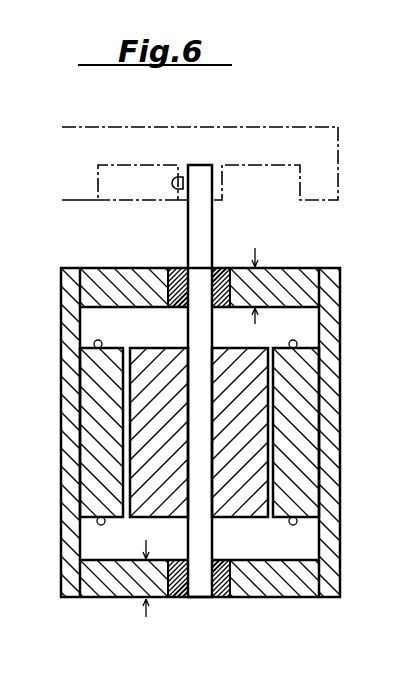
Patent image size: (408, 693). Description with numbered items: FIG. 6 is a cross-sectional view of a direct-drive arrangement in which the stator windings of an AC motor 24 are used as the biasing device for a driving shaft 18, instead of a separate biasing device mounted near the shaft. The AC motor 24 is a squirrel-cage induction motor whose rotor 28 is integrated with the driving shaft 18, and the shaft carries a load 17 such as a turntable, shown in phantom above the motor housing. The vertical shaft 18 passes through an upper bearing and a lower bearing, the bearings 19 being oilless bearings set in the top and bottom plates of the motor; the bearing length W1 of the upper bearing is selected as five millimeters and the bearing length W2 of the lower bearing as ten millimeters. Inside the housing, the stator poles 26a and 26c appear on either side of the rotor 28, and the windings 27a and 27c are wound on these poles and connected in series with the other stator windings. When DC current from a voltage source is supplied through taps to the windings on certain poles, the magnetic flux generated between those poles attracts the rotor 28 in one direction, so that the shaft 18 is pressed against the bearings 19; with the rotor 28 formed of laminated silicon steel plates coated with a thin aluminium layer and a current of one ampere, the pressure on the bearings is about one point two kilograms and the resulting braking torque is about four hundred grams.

The load 17 is at (338, 205).
The driving shaft 18 is at (188, 228).
The bearings 19 is at (176, 288).
The AC motor 24 is at (385, 437).
The pole 26a is at (100, 475).
The pole 26c is at (310, 472).
The winding 27a is at (102, 339).
The winding 27c is at (298, 343).
The rotor 28 is at (260, 408).
The bearing length of the upper bearing W1 is at (245, 282).
The bearing length of the lower bearing W2 is at (145, 584).